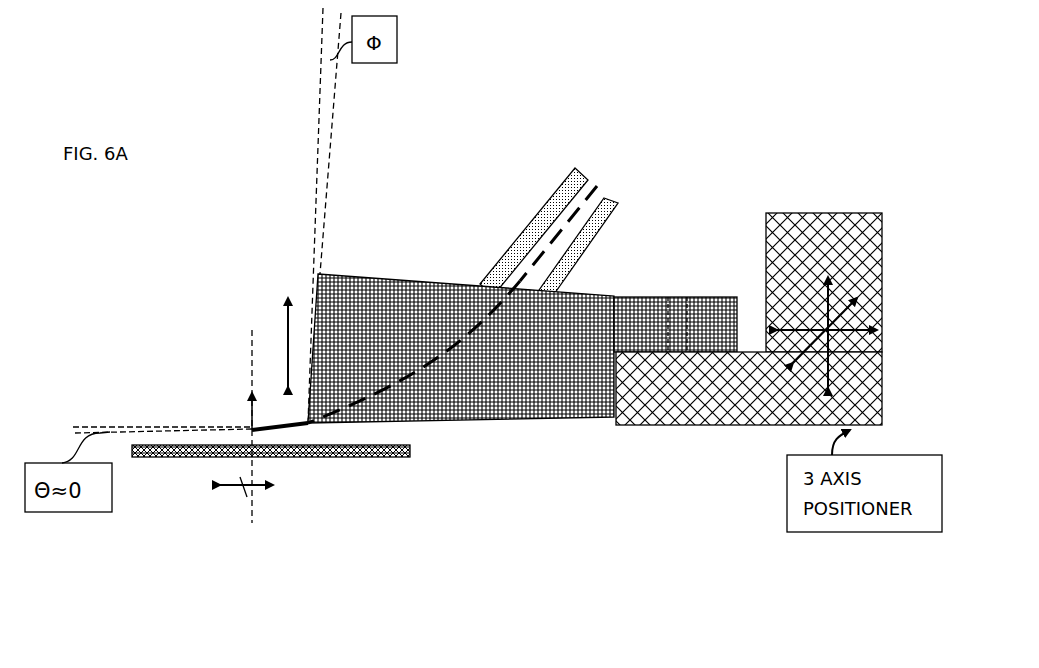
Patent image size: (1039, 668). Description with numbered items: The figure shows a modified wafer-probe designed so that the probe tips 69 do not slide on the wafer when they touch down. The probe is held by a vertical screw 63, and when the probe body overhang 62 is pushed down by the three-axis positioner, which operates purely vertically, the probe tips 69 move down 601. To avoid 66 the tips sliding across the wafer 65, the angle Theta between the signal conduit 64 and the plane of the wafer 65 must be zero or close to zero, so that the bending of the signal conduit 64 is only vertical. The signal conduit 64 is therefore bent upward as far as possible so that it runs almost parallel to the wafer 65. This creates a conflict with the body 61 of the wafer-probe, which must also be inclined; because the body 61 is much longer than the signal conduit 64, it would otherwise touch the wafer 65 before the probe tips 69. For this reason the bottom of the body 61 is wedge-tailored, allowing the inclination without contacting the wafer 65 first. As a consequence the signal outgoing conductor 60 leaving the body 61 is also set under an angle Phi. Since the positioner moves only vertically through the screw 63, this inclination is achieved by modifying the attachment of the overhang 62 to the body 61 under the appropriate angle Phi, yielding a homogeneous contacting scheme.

The signal outgoing conductor 60 is at (560, 185).
The downward movement of the probe tips 601 is at (290, 323).
The body of the wafer-probe 61 is at (527, 420).
The probe body overhang 62 is at (637, 297).
The vertical screw 63 is at (688, 297).
The signal conduit 64 is at (290, 428).
The wafer 65 is at (278, 457).
The sliding of the probe tips 66 is at (258, 493).
The probe tips 69 is at (252, 427).